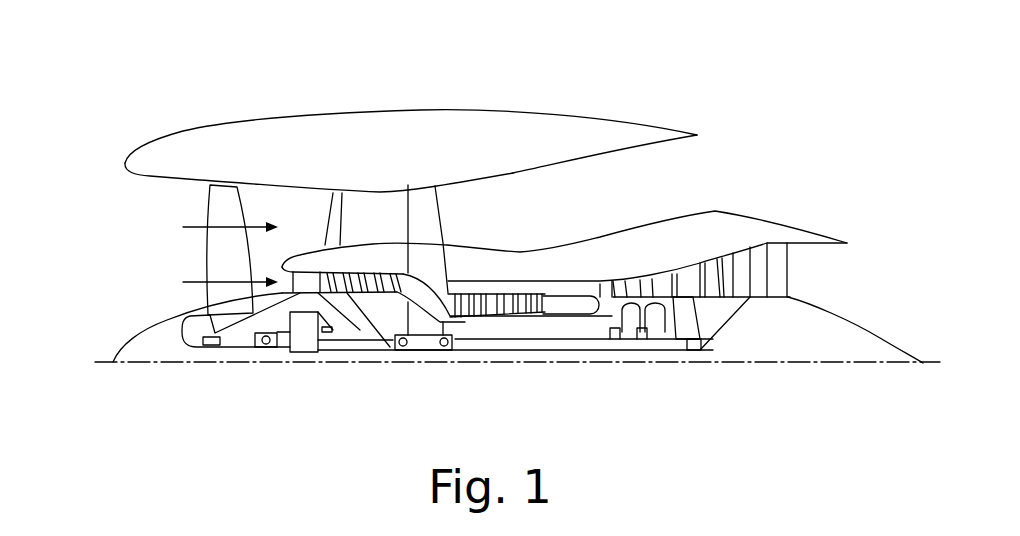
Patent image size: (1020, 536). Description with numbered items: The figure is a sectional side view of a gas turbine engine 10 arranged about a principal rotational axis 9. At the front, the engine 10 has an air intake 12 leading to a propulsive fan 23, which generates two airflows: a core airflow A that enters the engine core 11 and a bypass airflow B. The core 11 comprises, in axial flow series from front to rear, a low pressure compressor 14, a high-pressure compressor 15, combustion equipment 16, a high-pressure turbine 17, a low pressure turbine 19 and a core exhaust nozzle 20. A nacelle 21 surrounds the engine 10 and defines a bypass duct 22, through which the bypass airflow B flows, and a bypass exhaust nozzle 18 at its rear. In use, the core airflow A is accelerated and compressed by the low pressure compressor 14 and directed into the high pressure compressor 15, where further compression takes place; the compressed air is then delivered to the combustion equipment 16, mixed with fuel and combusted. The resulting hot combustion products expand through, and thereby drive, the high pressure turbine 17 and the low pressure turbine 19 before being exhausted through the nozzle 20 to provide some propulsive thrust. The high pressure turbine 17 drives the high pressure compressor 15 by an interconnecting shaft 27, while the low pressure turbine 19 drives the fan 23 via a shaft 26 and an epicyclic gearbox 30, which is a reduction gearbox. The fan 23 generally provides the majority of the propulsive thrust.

The gas turbine engine 10 is at (186, 133).
The nacelle 21 is at (423, 127).
The bypass exhaust nozzle 18 is at (690, 152).
The air intake 12 is at (141, 201).
The propulsive fan 23 is at (217, 265).
The principal rotational axis 9 is at (815, 363).
The core 11 is at (588, 276).
The bypass duct 22 is at (641, 175).
The low pressure compressor 14 is at (367, 272).
The high-pressure compressor 15 is at (507, 300).
The combustion equipment 16 is at (588, 305).
The high-pressure turbine 17 is at (633, 288).
The low pressure turbine 19 is at (760, 290).
The core exhaust nozzle 20 is at (847, 280).
The shaft 26 is at (473, 352).
The interconnecting shaft 27 is at (533, 339).
The epicyclic gearbox 30 is at (305, 342).